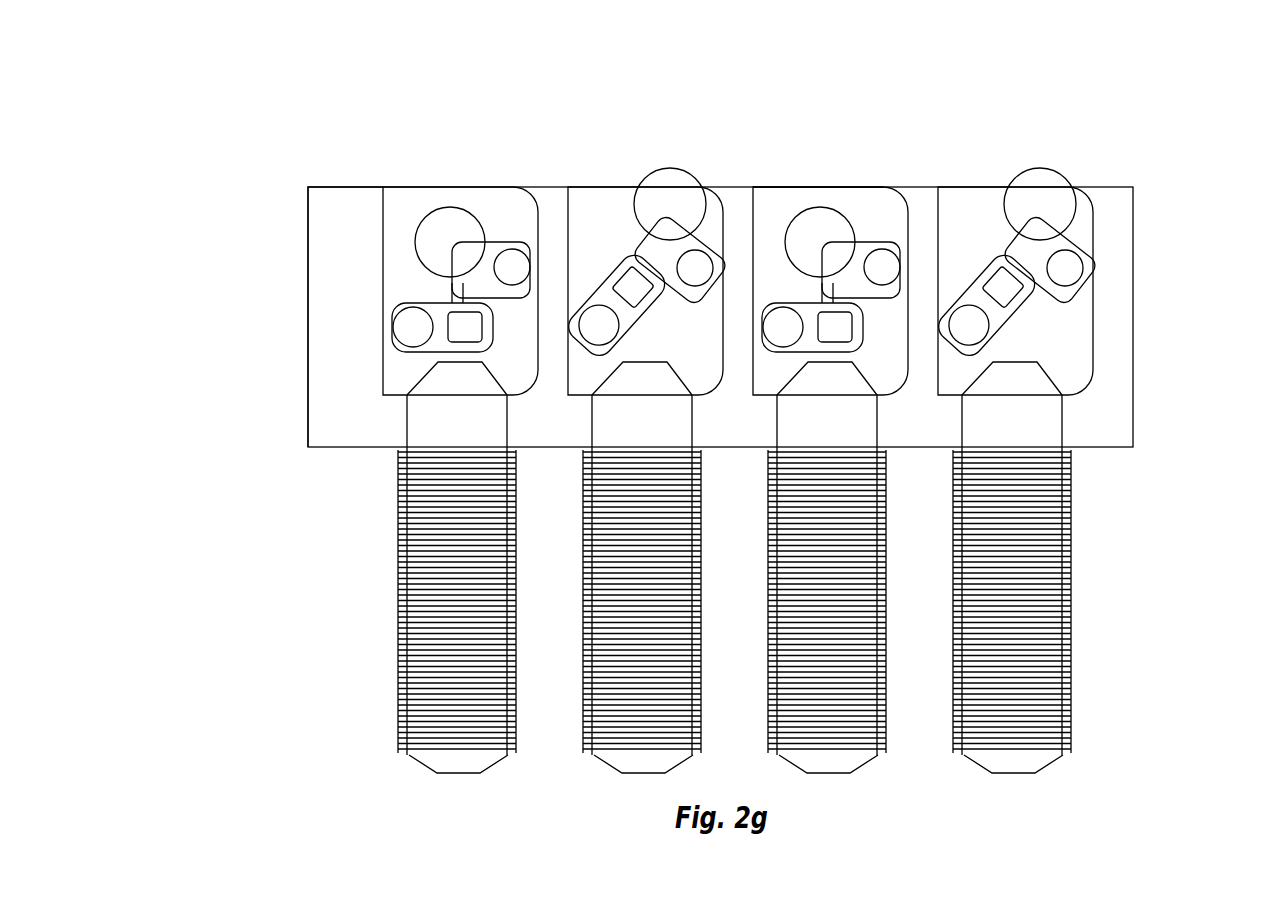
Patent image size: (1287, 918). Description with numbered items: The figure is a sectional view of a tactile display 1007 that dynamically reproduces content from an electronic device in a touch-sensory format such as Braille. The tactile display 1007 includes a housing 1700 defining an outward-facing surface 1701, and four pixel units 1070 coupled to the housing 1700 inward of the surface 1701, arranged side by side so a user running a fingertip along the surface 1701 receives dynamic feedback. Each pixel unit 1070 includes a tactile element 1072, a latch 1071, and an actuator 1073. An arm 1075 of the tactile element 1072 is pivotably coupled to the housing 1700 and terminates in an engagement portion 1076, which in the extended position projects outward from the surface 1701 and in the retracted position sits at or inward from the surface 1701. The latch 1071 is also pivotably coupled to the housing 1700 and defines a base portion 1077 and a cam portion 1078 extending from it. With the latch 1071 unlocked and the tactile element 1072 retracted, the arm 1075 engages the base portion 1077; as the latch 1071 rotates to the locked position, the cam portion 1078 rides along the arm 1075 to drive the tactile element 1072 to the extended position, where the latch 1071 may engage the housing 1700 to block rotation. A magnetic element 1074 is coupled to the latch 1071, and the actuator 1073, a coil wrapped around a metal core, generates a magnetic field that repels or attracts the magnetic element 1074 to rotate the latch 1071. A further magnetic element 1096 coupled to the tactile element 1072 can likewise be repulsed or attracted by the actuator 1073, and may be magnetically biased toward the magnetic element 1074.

The tactile display 1007 is at (720, 405).
The housing 1700 is at (350, 222).
The outward-facing surface 1701 is at (323, 185).
The magnetic element 1096 is at (485, 274).
The latch 1071 is at (410, 303).
The actuator 1073 is at (400, 548).
The engagement portion 1076 is at (683, 168).
The pixel unit 1070 is at (803, 192).
The tactile element 1072 is at (833, 192).
The arm 1075 is at (868, 240).
The base portion 1077 is at (965, 293).
The magnetic element 1074 is at (1015, 300).
The cam portion 1078 is at (1033, 273).